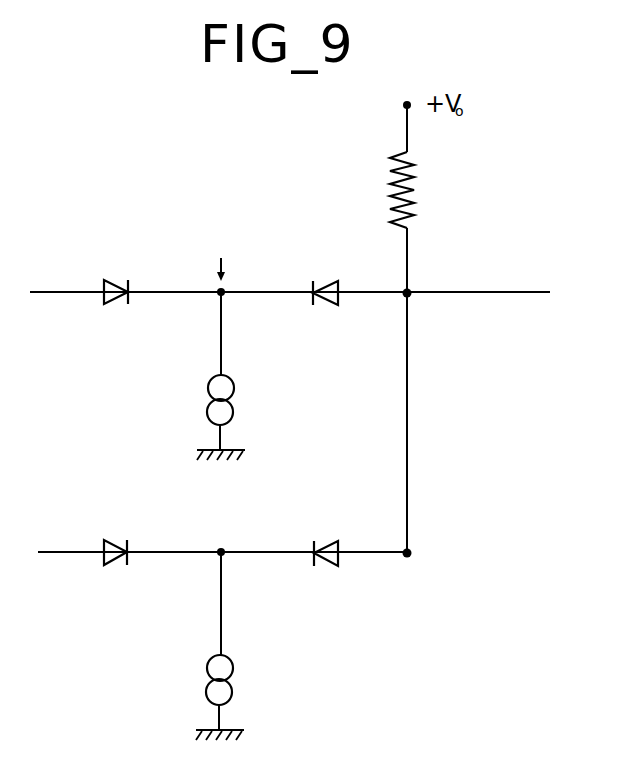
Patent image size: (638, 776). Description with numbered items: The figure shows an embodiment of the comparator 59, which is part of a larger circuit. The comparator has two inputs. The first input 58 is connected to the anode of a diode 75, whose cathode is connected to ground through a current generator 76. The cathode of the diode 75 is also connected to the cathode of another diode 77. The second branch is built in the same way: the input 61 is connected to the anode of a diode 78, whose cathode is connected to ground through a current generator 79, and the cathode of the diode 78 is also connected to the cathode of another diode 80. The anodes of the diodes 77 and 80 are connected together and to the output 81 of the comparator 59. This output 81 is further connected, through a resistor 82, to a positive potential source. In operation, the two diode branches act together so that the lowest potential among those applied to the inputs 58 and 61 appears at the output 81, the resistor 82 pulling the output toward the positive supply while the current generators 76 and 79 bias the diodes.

The input 58 is at (72, 292).
The comparator 59 is at (484, 403).
The input 61 is at (90, 552).
The diode 75 is at (114, 284).
The current generator 76 is at (226, 412).
The diode 77 is at (325, 283).
The diode 78 is at (114, 544).
The current generator 79 is at (225, 692).
The diode 80 is at (340, 550).
The output 81 is at (409, 296).
The resistor 82 is at (410, 180).